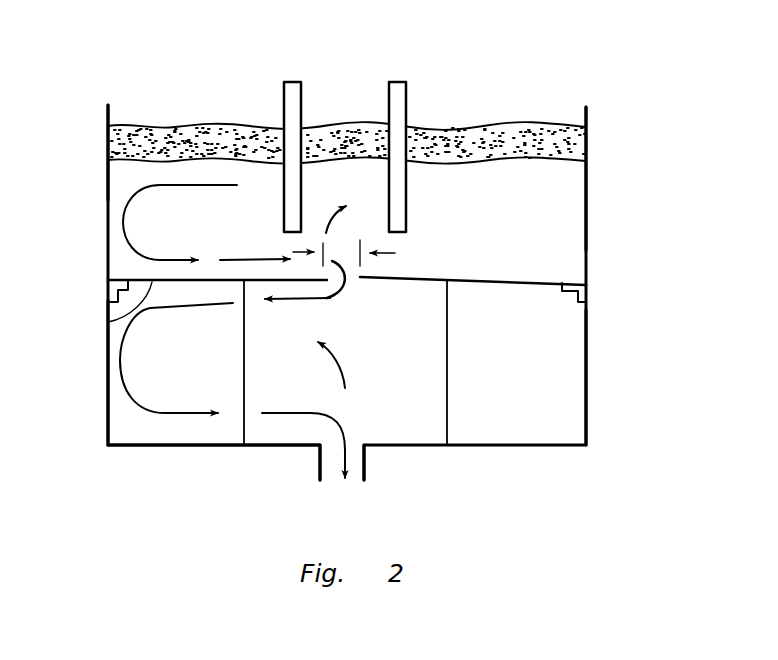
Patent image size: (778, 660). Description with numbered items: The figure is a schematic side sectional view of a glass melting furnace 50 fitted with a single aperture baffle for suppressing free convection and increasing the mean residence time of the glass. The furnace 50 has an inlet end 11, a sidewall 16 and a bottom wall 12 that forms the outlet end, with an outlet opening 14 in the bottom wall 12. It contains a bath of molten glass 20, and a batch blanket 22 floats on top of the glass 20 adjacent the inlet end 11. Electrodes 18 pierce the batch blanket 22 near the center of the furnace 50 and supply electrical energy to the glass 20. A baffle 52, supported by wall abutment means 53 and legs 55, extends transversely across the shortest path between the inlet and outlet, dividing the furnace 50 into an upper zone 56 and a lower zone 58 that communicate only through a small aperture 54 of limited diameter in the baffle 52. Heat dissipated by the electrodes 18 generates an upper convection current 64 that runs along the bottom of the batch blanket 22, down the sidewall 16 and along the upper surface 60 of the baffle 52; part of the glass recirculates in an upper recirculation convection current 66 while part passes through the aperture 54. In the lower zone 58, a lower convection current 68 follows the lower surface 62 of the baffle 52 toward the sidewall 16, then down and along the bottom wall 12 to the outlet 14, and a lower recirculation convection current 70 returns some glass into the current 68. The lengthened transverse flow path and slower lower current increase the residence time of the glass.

The inlet end 11 is at (109, 107).
The bottom wall 12 is at (168, 447).
The outlet opening 14 is at (364, 470).
The sidewall 16 is at (108, 378).
The electrodes 18 is at (389, 100).
The molten glass 20 is at (538, 378).
The batch blanket 22 is at (205, 140).
The furnace 50 is at (574, 84).
The baffle 52 is at (543, 282).
The wall abutment means 53 is at (567, 296).
The aperture 54 is at (356, 284).
The legs 55 is at (243, 372).
The upper zone 56 is at (570, 195).
The lower zone 58 is at (570, 405).
The upper surface 60 is at (133, 280).
The lower surface 62 is at (108, 323).
The convection current 64 is at (212, 186).
The upper recirculation convection current 66 is at (334, 232).
The lower convection current 68 is at (308, 300).
The lower recirculation convection current 70 is at (340, 363).